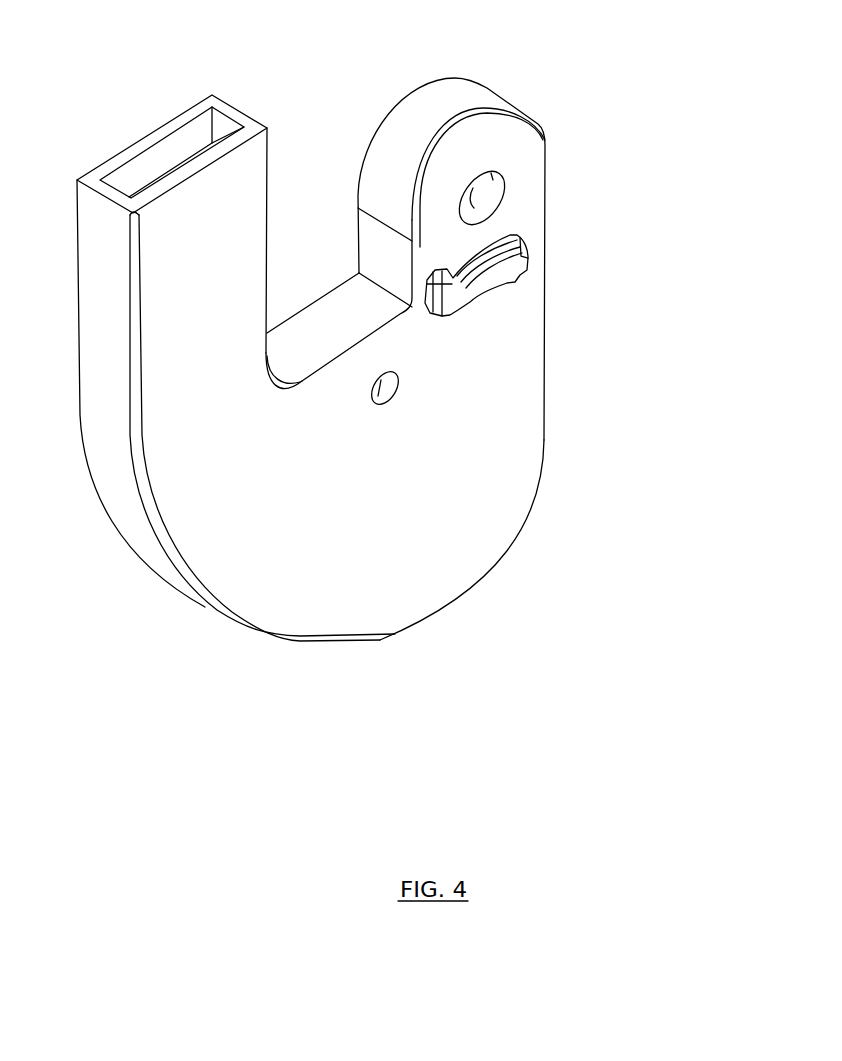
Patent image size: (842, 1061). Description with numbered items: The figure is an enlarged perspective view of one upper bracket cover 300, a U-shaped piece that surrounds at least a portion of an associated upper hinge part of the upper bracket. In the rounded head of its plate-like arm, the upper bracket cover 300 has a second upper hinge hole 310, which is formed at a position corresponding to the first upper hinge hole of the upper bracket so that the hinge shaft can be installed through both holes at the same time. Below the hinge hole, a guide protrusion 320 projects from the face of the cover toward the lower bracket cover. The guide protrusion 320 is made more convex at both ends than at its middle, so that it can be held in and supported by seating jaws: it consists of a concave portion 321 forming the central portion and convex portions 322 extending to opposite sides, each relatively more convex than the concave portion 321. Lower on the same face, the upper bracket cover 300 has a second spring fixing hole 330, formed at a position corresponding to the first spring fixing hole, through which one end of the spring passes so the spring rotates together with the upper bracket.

The upper bracket cover 300 is at (138, 132).
The second upper hinge hole 310 is at (480, 200).
The guide protrusion 320 is at (595, 288).
The concave portion 321 is at (485, 289).
The convex portion 322 is at (512, 234).
The second spring fixing hole 330 is at (386, 392).